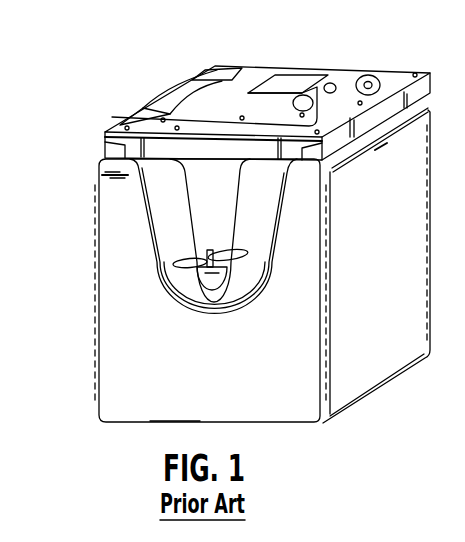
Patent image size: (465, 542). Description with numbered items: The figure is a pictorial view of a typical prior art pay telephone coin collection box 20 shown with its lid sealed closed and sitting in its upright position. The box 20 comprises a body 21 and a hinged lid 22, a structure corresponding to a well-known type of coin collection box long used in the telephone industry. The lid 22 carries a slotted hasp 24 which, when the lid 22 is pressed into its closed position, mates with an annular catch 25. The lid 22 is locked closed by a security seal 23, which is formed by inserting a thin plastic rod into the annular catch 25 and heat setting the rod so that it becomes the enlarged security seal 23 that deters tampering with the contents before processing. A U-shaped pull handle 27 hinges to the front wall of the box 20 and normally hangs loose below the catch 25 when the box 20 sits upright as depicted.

The telephone coin collection box 20 is at (251, 227).
The body 21 is at (373, 360).
The hinged lid 22 is at (396, 78).
The security seal 23 is at (183, 260).
The slotted hasp 24 is at (199, 197).
The annular catch 25 is at (211, 252).
The U-shaped pull handle 27 is at (182, 301).